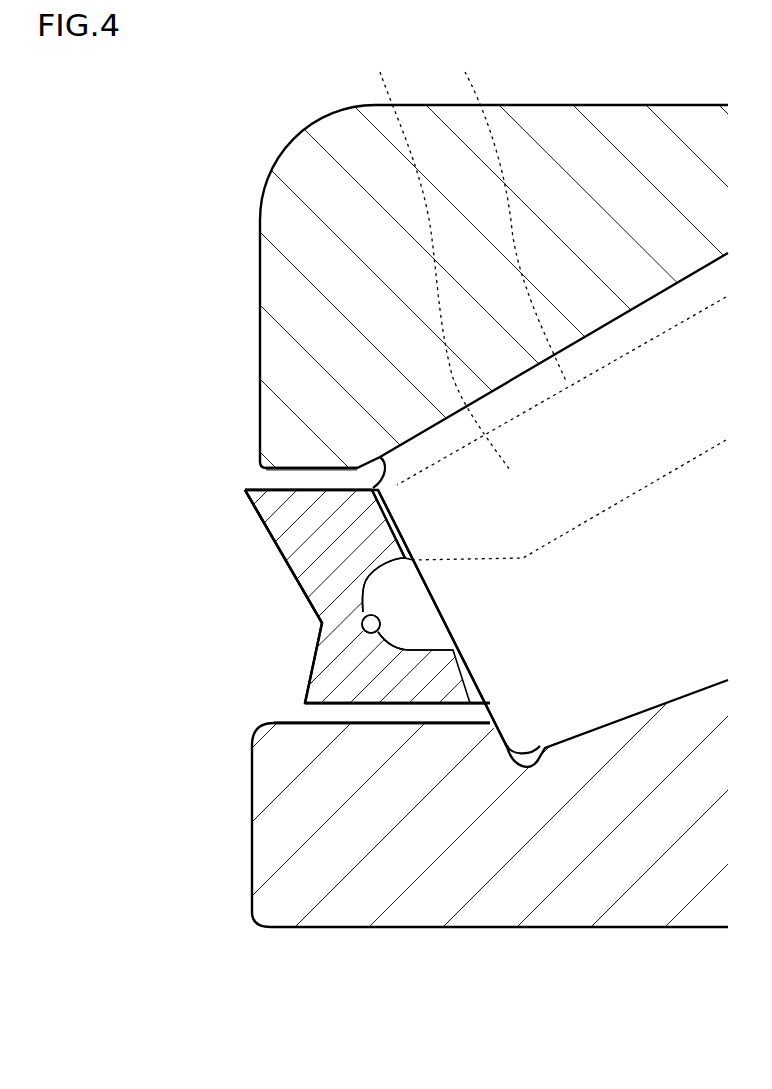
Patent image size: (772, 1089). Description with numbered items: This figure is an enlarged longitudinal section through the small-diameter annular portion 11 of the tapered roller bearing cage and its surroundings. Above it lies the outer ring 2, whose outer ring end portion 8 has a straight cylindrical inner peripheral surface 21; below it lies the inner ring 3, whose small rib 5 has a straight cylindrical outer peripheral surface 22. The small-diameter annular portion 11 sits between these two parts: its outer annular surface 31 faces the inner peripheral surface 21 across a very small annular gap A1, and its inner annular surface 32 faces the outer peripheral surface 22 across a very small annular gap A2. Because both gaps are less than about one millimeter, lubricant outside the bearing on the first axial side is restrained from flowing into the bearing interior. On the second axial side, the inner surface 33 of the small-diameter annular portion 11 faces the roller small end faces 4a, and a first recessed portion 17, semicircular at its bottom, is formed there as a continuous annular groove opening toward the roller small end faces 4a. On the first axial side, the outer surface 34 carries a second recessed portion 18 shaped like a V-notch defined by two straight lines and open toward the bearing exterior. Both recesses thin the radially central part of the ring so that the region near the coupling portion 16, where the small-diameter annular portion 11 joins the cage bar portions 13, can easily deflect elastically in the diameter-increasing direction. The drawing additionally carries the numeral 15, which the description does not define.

The outer ring 2 is at (548, 132).
The inner ring 3 is at (543, 873).
The roller small end face 4a is at (432, 591).
The small rib 5 is at (297, 742).
The outer ring end portion 8 is at (288, 445).
The small-diameter annular portion 11 is at (292, 527).
The cage bar portion 13 is at (435, 258).
The boundary line 15 is at (507, 214).
The coupling portion 16 is at (363, 510).
The first recessed portion 17 is at (373, 635).
The second recessed portion 18 is at (322, 623).
The inner peripheral surface 21 is at (293, 473).
The outer peripheral surface 22 is at (328, 713).
The outer annular surface 31 is at (325, 488).
The inner annular surface 32 is at (390, 703).
The inner surface 33 is at (405, 532).
The outer surface 34 is at (285, 560).
The annular gap A1 is at (255, 485).
The annular gap A2 is at (291, 717).